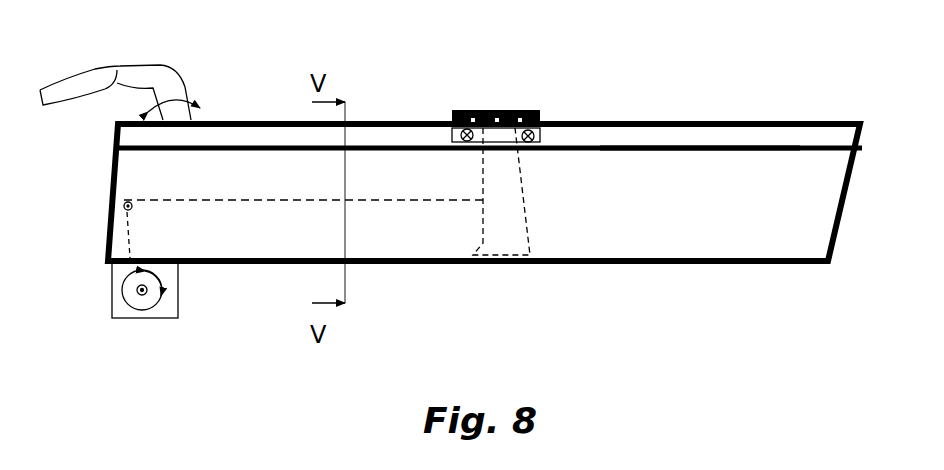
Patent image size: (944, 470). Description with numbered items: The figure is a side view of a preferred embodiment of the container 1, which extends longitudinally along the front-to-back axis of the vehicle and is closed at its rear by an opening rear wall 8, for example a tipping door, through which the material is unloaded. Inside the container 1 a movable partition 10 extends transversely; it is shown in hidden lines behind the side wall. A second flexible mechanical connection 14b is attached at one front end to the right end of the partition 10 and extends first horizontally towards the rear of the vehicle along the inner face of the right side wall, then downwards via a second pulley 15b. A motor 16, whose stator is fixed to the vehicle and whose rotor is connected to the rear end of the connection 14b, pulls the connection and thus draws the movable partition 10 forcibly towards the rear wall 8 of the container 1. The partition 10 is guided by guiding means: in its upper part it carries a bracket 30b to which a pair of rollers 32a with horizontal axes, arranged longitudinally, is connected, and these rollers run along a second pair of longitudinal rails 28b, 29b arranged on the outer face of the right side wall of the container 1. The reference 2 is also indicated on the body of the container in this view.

The container 1 is at (605, 312).
The body 2 is at (697, 265).
The opening rear wall 8 is at (82, 80).
The movable partition 10 is at (518, 218).
The second flexible mechanical connection 14b is at (307, 198).
The second pulley 15b is at (133, 208).
The motor 16 is at (122, 290).
The rail 28b is at (678, 121).
The rail 29b is at (700, 151).
The bracket 30b is at (488, 110).
The first pair of rollers 32a is at (462, 143).